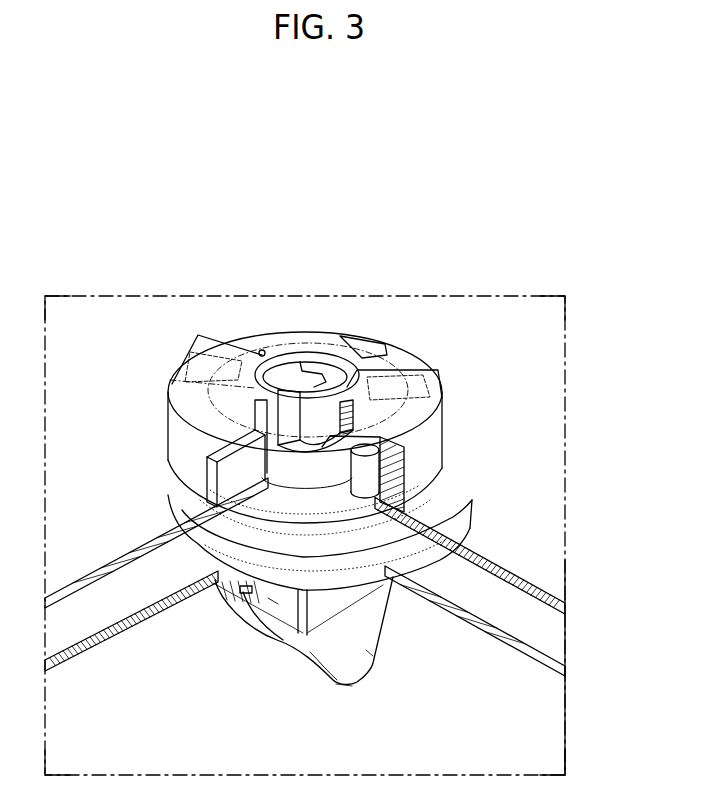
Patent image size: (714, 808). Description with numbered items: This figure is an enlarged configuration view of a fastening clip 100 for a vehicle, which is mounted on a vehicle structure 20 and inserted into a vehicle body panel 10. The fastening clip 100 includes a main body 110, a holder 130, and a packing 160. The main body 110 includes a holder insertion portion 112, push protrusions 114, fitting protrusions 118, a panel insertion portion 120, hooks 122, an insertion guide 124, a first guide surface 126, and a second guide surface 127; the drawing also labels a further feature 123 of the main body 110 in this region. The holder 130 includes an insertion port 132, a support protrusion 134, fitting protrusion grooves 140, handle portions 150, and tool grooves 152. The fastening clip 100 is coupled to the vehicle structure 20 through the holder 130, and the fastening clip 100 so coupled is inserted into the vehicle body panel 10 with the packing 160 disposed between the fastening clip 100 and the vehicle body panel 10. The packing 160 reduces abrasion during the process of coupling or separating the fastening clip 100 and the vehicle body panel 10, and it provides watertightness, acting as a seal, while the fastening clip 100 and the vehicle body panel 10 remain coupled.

The fastening clip 100 is at (302, 137).
The main body 110 is at (285, 666).
The holder insertion portion 112 is at (262, 426).
The push protrusions 114 is at (274, 391).
The fitting protrusions 118 is at (372, 482).
The panel insertion portion 120 is at (350, 595).
The hooks 122 is at (243, 601).
The hook shaft 123 is at (273, 602).
The insertion guide 124 is at (352, 690).
The first guide surface 126 is at (315, 672).
The second guide surface 127 is at (373, 665).
The holder 130 is at (358, 394).
The insertion port 132 is at (322, 352).
The support protrusion 134 is at (443, 440).
The fitting protrusion grooves 140 is at (232, 471).
The handle portions 150 is at (342, 318).
The tool grooves 152 is at (213, 350).
The packing 160 is at (195, 556).
The vehicle body panel 10 is at (517, 647).
The vehicle structure 20 is at (517, 585).